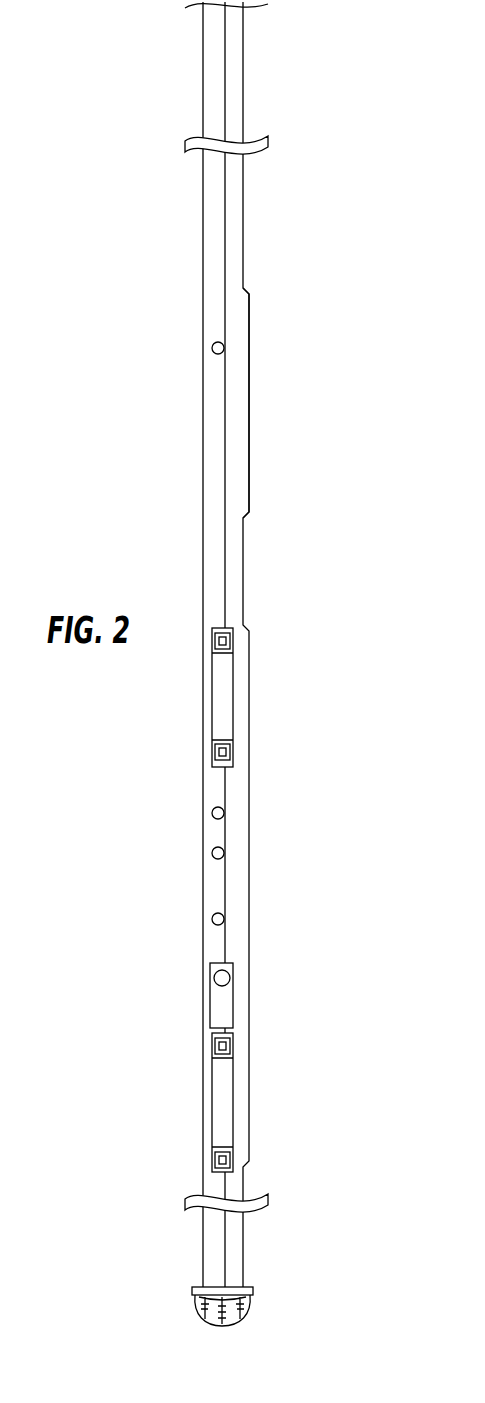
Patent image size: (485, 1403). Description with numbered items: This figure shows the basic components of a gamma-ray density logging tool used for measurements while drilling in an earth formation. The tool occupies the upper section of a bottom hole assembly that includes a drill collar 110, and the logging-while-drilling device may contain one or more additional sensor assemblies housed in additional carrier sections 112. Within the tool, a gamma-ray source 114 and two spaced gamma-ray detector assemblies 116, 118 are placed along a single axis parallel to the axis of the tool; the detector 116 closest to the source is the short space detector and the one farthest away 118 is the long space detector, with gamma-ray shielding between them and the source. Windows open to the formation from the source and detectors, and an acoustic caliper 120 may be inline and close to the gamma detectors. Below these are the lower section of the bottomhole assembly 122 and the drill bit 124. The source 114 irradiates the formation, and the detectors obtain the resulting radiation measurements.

The drill collar 110 is at (258, 82).
The additional carrier sections 112 is at (258, 361).
The gamma-ray source 114 is at (258, 764).
The short space detector 116 is at (258, 817).
The long space detector 118 is at (258, 876).
The acoustic caliper 120 is at (258, 943).
The lower section of the bottomhole assembly 122 is at (258, 1230).
The drill bit 124 is at (258, 1274).